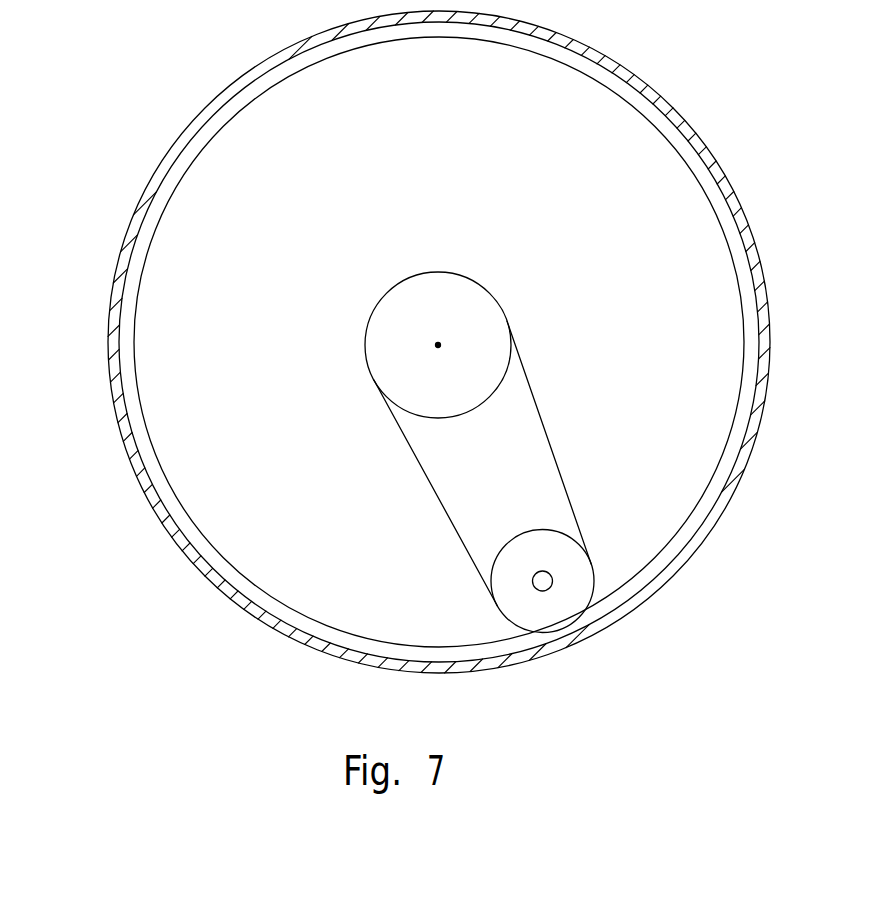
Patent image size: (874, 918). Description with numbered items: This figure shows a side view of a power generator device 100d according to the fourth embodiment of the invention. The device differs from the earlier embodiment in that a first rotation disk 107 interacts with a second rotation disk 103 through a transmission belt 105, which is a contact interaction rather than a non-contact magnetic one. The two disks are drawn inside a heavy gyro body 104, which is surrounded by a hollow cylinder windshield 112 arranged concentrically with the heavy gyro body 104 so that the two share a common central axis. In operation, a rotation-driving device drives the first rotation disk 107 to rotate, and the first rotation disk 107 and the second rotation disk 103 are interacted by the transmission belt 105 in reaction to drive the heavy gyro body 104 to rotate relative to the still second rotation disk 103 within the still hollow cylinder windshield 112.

The power generator device 100d is at (95, 84).
The second rotation disk 103 is at (485, 322).
The heavy gyro body 104 is at (660, 190).
The transmission belt 105 is at (552, 447).
The first rotation disk 107 is at (578, 573).
The hollow cylinder windshield 112 is at (220, 585).